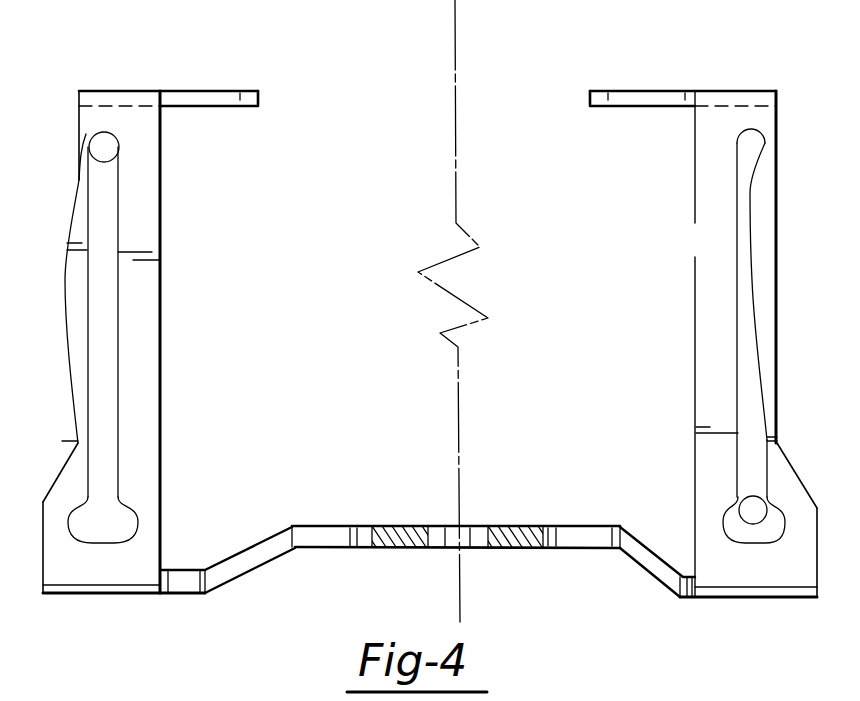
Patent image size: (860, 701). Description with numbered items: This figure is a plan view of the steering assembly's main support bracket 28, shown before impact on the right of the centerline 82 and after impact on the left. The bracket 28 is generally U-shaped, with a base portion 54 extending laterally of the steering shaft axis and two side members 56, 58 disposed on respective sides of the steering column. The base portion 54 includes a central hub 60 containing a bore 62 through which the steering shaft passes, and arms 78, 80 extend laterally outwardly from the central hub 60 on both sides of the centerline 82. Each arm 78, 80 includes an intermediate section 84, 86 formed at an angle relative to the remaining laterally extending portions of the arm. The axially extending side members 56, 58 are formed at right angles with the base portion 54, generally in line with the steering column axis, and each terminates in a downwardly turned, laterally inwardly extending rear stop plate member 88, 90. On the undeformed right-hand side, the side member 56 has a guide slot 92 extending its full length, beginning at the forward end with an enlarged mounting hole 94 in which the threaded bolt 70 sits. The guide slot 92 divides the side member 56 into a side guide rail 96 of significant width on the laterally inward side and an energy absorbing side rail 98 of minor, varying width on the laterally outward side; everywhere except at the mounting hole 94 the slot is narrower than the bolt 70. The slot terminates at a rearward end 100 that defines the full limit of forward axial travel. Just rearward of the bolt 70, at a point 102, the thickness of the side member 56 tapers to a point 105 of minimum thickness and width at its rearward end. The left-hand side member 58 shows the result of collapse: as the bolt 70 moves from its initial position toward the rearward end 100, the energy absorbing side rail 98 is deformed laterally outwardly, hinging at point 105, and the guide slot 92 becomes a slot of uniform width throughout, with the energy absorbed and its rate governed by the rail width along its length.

The main support bracket 28 is at (240, 62).
The base portion 54 is at (369, 560).
The side member 56 is at (747, 580).
The side member 58 is at (93, 578).
The central hub 60 is at (395, 525).
The bore 62 is at (482, 525).
The threaded bolt 70 is at (104, 147).
The arm 78 is at (312, 525).
The arm 80 is at (575, 525).
The centerline 82 is at (457, 56).
The intermediate section 84 is at (653, 578).
The intermediate section 86 is at (227, 583).
The rear stop plate member 88 is at (638, 103).
The rear stop plate member 90 is at (228, 107).
The guide slot 92 is at (103, 408).
The mounting hole 94 is at (115, 527).
The side guide rail 96 is at (145, 325).
The energy absorbing side rail 98 is at (80, 293).
The rearward end 100 is at (758, 143).
The point 102 is at (45, 505).
The point of minimum thickness 105 is at (78, 443).